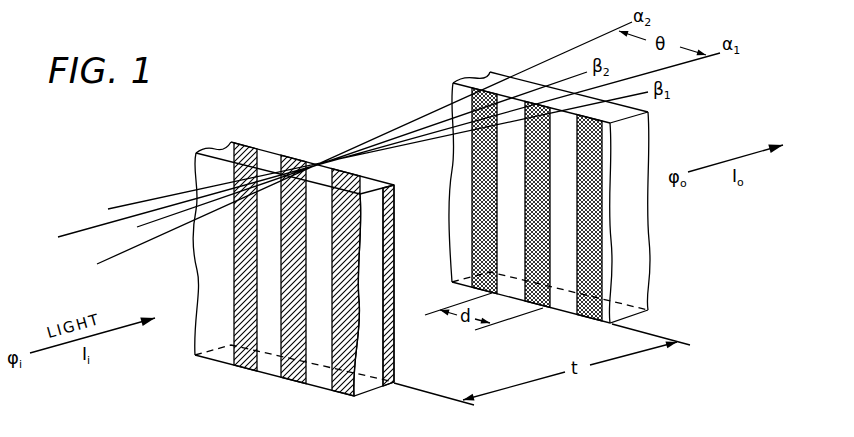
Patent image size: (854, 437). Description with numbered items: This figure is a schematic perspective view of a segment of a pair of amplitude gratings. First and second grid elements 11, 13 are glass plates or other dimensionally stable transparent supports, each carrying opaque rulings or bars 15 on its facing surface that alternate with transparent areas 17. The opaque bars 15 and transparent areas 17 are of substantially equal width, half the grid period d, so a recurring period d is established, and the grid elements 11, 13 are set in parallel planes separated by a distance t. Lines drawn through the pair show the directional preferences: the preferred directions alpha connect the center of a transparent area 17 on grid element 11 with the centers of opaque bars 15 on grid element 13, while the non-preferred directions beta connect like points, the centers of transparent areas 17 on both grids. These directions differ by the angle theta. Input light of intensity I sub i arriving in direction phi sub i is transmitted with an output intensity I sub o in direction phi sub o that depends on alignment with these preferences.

The first grid element 11 is at (271, 374).
The second grid element 13 is at (651, 291).
The opaque rulings or bars 15 is at (240, 143).
The transparent areas 17 is at (268, 152).